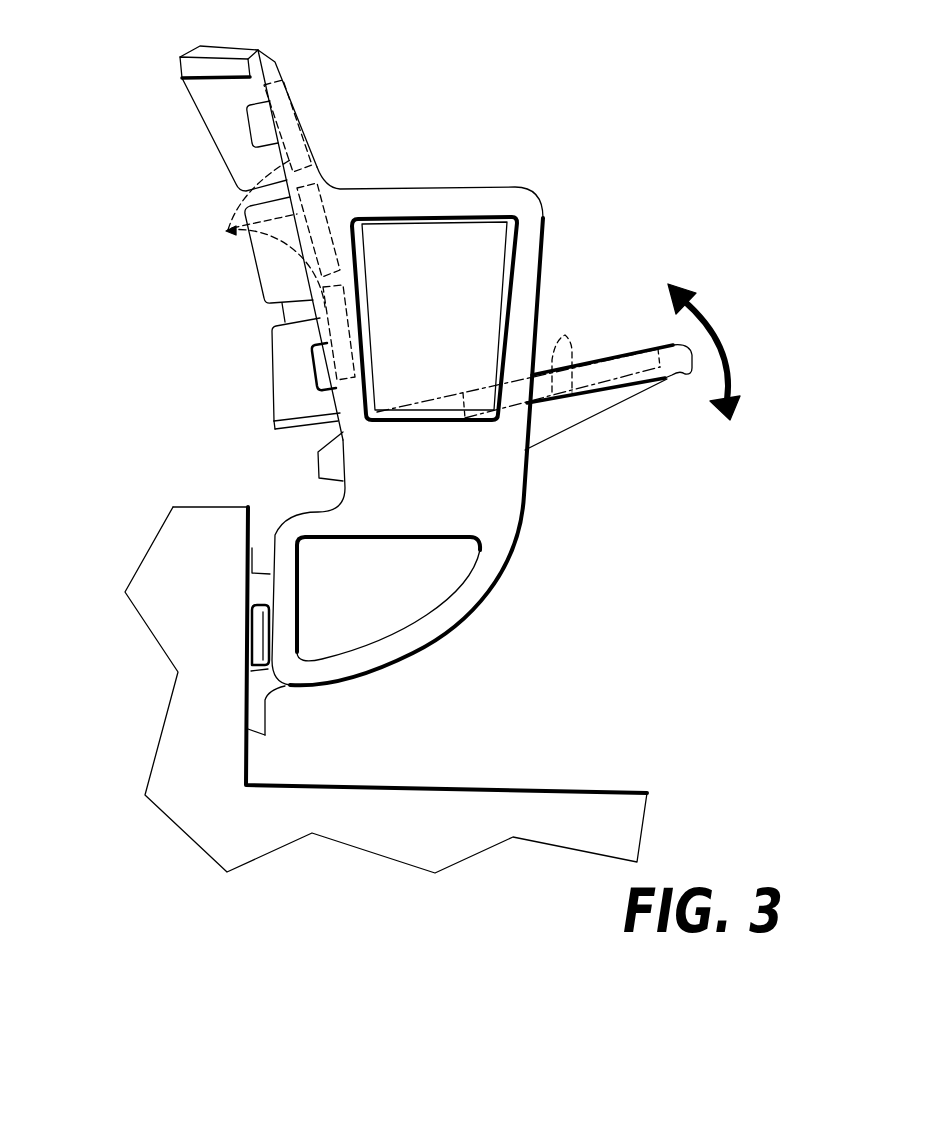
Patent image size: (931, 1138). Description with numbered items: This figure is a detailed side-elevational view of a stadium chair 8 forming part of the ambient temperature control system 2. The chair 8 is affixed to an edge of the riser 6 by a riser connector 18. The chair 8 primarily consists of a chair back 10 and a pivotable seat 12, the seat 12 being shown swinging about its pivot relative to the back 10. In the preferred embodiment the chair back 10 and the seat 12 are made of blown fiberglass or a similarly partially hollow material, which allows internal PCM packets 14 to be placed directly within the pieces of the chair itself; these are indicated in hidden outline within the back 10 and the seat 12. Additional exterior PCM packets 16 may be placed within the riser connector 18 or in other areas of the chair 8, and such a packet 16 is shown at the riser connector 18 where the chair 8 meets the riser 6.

The ambient temperature control system 2 is at (704, 62).
The riser 6 is at (195, 506).
The stadium chair 8 is at (105, 58).
The chair back 10 is at (298, 112).
The pivotable seat 12 is at (668, 342).
The internal PCM packets 14 is at (394, 276).
The exterior PCM packets 16 is at (257, 627).
The riser connector 18 is at (252, 548).